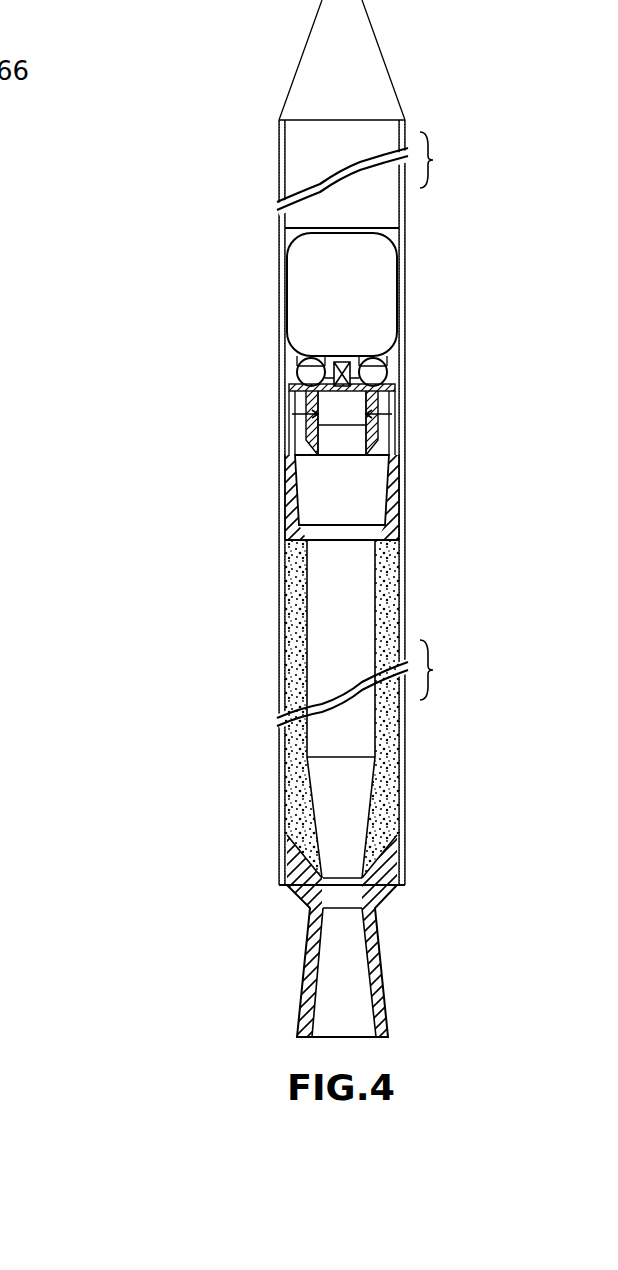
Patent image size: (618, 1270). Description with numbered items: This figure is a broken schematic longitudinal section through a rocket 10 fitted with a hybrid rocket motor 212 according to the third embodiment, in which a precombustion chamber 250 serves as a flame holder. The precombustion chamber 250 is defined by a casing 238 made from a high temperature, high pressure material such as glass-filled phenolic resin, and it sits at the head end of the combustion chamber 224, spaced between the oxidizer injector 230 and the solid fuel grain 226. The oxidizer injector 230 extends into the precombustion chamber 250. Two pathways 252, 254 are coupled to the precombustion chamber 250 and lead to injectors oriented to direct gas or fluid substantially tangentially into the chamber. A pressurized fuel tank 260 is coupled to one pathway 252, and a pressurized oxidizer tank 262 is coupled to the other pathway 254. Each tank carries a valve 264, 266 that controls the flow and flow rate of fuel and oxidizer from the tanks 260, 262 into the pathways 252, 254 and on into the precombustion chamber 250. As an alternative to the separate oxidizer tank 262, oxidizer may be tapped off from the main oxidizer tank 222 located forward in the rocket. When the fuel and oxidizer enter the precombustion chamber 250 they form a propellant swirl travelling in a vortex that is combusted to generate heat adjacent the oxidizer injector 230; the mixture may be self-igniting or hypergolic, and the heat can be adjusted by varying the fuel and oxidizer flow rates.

The projectile 10 is at (4, 195).
The hybrid rocket motor 212 is at (84, 852).
The main oxidizer tank 222 is at (302, 270).
The combustion chamber 224 is at (317, 588).
The solid fuel grain 226 is at (292, 628).
The oxidizer injector 230 is at (345, 440).
The casing 238 is at (402, 502).
The precombustion chamber 250 is at (313, 493).
The pathway 252 is at (285, 418).
The pathway 254 is at (395, 418).
The pressurized fuel tank 260 is at (283, 346).
The pressurized oxidizer tank 262 is at (403, 354).
The valve 264 is at (302, 371).
The valve 266 is at (384, 373).